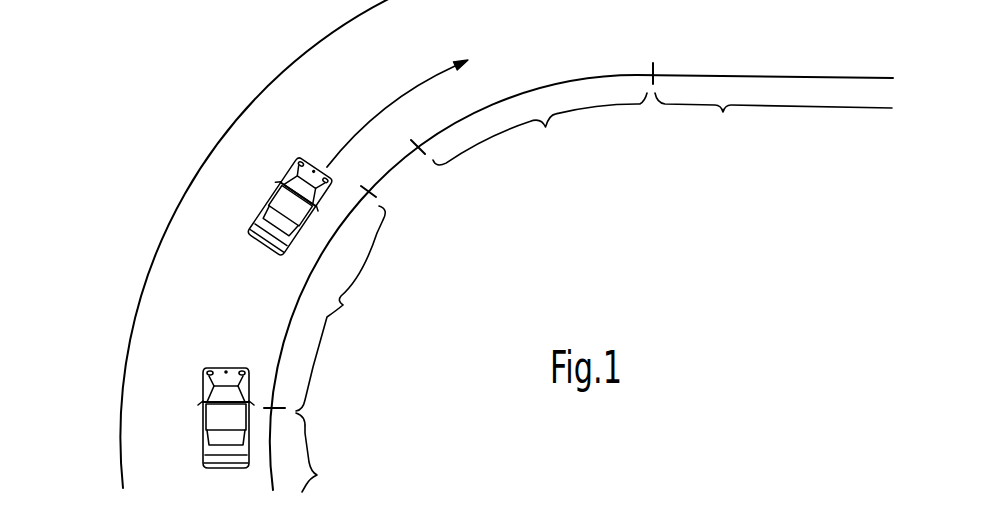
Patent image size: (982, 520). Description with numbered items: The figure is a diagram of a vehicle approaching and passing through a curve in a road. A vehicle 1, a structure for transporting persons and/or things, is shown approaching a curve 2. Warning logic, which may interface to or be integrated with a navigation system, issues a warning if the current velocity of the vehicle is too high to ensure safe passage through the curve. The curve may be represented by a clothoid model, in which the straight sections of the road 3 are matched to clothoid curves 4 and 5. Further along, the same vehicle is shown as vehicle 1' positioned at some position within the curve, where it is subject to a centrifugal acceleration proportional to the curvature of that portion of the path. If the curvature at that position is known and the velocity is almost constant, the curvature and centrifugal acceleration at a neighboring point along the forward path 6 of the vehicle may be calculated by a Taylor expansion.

The vehicle 1 is at (167, 418).
The vehicle 1' is at (247, 196).
The curve 2 is at (273, 79).
The straight sections of the road 3 is at (594, 292).
The clothoid curve 4 is at (340, 308).
The clothoid curve 5 is at (540, 129).
The forward path 6 is at (372, 125).